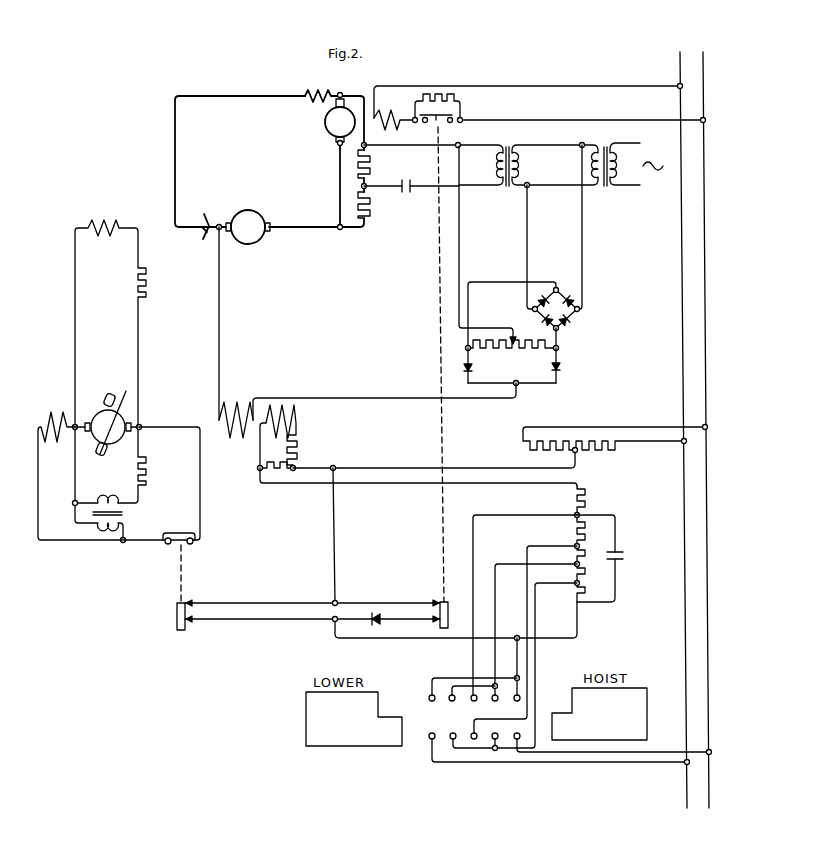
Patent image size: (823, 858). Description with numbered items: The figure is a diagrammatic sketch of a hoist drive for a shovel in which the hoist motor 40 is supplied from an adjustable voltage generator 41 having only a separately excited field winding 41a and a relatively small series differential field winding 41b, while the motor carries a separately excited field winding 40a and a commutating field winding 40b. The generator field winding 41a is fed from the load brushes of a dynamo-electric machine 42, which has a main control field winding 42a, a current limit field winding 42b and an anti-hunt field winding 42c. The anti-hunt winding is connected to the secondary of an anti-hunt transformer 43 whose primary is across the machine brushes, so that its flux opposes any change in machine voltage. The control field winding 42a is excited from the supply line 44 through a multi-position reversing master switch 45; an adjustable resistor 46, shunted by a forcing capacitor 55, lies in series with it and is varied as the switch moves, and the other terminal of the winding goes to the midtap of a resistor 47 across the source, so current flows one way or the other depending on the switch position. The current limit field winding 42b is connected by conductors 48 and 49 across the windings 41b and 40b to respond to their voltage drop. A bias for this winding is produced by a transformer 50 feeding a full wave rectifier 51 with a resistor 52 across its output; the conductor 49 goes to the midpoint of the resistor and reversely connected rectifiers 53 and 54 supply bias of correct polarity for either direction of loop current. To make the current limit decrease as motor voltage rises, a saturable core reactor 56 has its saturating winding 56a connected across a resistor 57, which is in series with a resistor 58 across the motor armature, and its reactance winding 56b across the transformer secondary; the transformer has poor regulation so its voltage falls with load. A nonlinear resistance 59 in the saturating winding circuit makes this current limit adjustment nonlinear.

The hoist motor 40 is at (328, 126).
The separately excited field winding 40a is at (392, 118).
The commutating field winding 40b is at (318, 92).
The adjustable voltage generator 41 is at (257, 221).
The separately excited field winding 41a is at (104, 224).
The series differential field winding 41b is at (206, 221).
The dynamo-electric machine 42 is at (119, 403).
The main control field winding 42a is at (285, 419).
The current limit field winding 42b is at (236, 407).
The anti-hunt field winding 42c is at (50, 415).
The anti-hunt transformer 43 is at (125, 513).
The supply line 44 is at (709, 622).
The master switch 45 is at (568, 665).
The adjustable resistor 46 is at (570, 537).
The resistor 47 is at (590, 432).
The conductor 48 is at (221, 308).
The conductor 49 is at (461, 233).
The transformer 50 is at (606, 188).
The full wave rectifier 51 is at (566, 312).
The resistor 52 is at (518, 350).
The rectifier 53 is at (468, 374).
The rectifier 54 is at (561, 368).
The forcing capacitor 55 is at (624, 556).
The saturable core type reactor 56 is at (527, 177).
The direct current saturating winding 56a is at (496, 164).
The reactance winding 56b is at (523, 165).
The resistor 57 is at (372, 156).
The resistor 58 is at (372, 207).
The resistance 59 is at (410, 181).